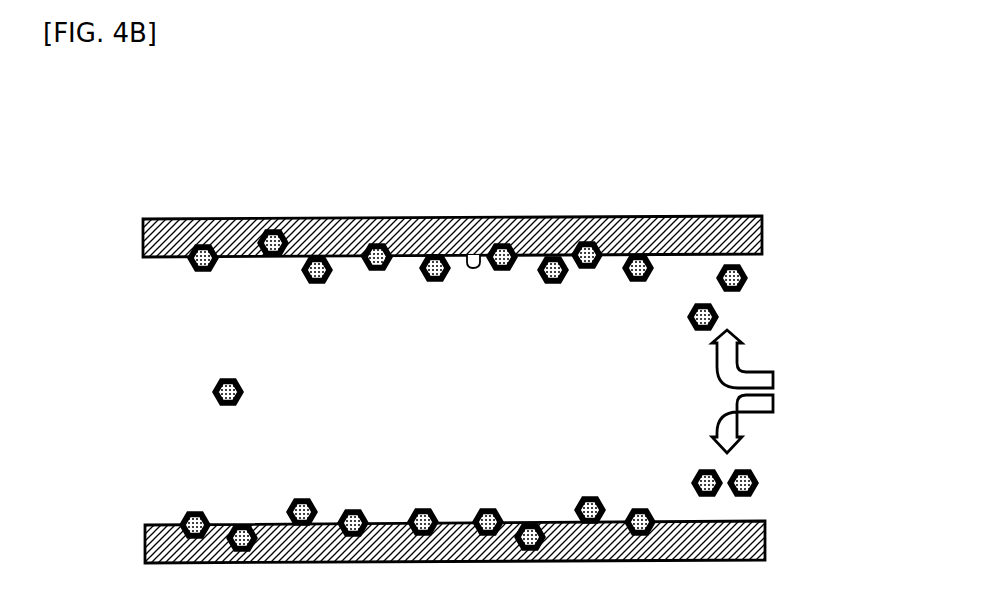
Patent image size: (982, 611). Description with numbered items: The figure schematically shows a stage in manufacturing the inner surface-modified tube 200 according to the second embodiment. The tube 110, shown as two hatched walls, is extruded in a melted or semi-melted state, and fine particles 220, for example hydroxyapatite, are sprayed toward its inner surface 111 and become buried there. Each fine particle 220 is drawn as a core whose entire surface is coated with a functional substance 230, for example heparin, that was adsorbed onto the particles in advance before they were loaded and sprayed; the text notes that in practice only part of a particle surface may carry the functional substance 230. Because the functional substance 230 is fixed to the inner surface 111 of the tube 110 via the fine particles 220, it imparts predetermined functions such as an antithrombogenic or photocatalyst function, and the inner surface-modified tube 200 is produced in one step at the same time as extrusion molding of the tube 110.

The inner surface-modified tube 200 is at (482, 88).
The tube 110 is at (652, 215).
The inner surface 111 is at (483, 254).
The fine particles 220 is at (383, 243).
The functional substance 230 is at (336, 205).